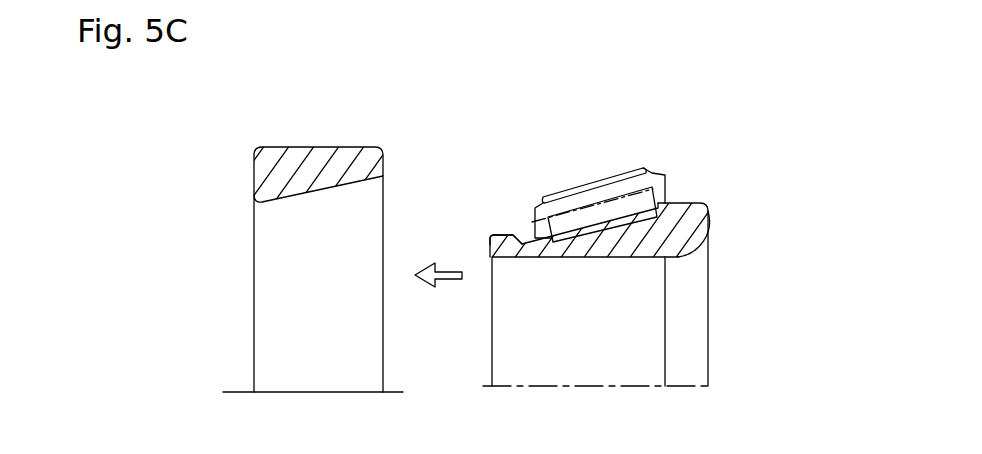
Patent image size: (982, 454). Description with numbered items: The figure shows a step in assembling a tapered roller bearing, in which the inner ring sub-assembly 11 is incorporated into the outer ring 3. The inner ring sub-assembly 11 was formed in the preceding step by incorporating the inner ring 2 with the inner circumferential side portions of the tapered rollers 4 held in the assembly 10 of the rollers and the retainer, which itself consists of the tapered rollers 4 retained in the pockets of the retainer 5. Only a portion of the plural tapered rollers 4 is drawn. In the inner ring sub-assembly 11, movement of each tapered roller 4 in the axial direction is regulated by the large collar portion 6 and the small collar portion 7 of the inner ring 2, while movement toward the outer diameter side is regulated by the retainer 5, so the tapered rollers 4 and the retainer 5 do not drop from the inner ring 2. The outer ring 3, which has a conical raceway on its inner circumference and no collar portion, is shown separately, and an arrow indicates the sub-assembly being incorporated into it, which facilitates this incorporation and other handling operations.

The inner ring 2 is at (614, 265).
The outer ring 3 is at (305, 155).
The tapered rollers 4 is at (572, 187).
The retainer 5 is at (605, 197).
The large collar portion 6 is at (673, 208).
The small collar portion 7 is at (515, 237).
The assembly of the rollers and the retainer 10 is at (567, 105).
The inner ring sub-assembly 11 is at (688, 143).